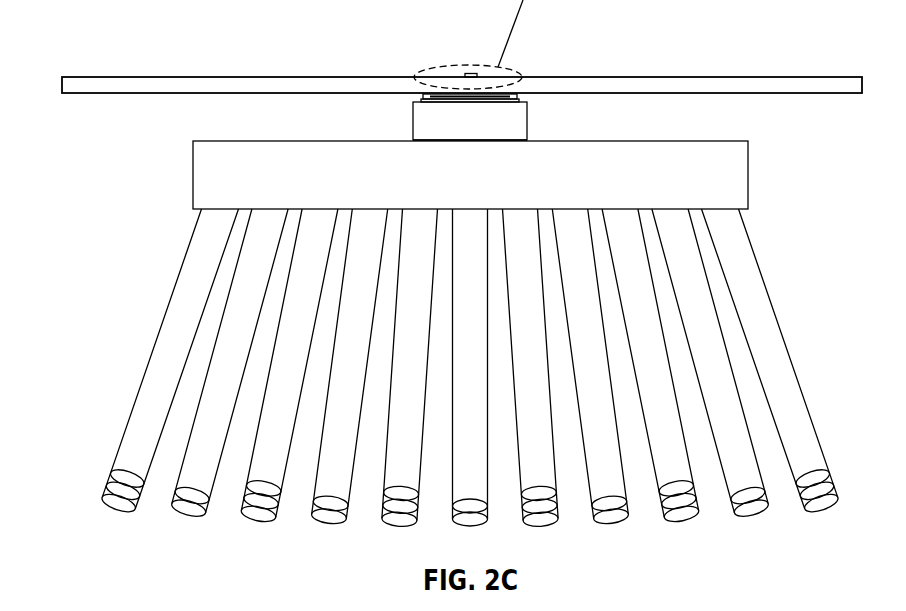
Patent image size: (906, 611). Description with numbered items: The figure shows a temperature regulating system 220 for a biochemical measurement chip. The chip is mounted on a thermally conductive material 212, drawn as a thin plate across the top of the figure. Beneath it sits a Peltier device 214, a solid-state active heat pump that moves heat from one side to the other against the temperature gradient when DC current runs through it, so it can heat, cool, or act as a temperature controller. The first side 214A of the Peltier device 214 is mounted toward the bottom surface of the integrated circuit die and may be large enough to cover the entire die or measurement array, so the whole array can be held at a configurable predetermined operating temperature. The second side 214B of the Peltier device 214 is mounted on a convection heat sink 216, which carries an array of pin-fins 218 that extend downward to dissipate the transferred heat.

The thermally conductive material 212 is at (827, 87).
The Peltier device 214 is at (527, 118).
The first side of Peltier device 214A is at (407, 95).
The second side of Peltier device 214B is at (410, 138).
The convection heat sink 216 is at (730, 175).
The pin-fins 218 is at (758, 321).
The temperature regulating system 220 is at (90, 342).